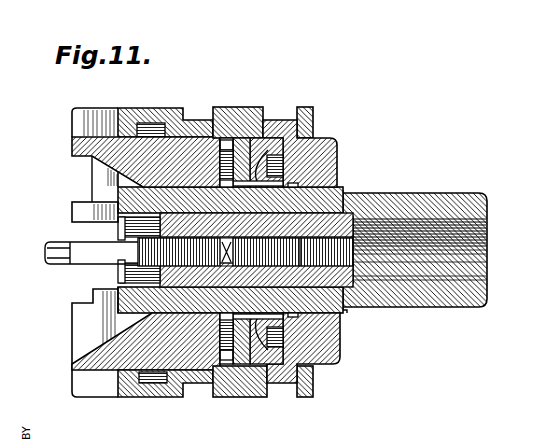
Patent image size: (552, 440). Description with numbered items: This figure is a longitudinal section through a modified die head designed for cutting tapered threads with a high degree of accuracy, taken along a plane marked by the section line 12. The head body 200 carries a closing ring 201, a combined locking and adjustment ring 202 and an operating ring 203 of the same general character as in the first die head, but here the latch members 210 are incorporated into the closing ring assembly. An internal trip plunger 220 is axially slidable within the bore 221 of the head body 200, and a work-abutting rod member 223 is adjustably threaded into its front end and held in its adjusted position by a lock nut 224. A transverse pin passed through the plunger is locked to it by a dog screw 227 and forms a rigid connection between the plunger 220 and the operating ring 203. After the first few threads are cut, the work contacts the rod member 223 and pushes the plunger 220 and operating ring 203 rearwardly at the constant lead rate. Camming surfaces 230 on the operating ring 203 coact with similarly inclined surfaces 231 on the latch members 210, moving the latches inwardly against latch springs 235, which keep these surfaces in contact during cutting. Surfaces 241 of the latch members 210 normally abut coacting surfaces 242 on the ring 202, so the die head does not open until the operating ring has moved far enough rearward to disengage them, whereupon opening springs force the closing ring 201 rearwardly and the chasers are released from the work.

The section line 12- 12 is at (42, 250).
The head body 200 is at (346, 192).
The closing ring 201 is at (137, 348).
The combined locking and adjustment ring 202 is at (338, 353).
The operating ring 203 is at (253, 147).
The latch members 210 is at (258, 152).
The internal trip plunger 220 is at (360, 266).
The bore 221 is at (428, 282).
The work-abutting rod member 223 is at (95, 267).
The lock nut 224 is at (103, 215).
The dog screw 227 is at (344, 312).
The camming surfaces 230 is at (249, 141).
The inclined surfaces 231 is at (249, 143).
The latch springs 235 is at (201, 137).
The abutment surfaces of latch members 241 is at (312, 152).
The coacting surfaces 242 is at (304, 147).